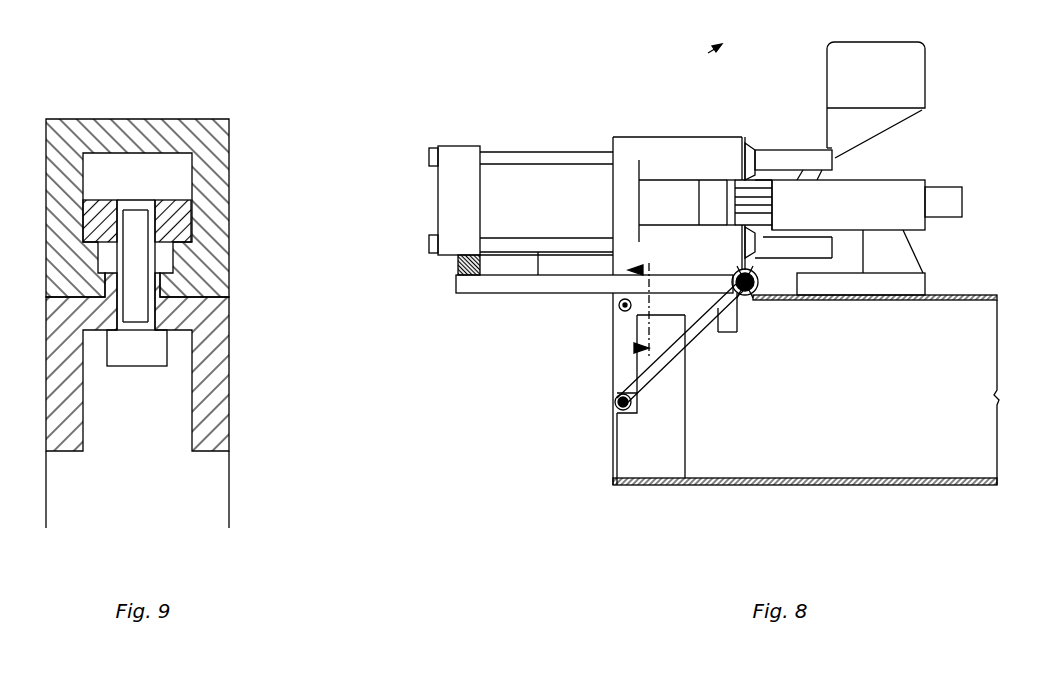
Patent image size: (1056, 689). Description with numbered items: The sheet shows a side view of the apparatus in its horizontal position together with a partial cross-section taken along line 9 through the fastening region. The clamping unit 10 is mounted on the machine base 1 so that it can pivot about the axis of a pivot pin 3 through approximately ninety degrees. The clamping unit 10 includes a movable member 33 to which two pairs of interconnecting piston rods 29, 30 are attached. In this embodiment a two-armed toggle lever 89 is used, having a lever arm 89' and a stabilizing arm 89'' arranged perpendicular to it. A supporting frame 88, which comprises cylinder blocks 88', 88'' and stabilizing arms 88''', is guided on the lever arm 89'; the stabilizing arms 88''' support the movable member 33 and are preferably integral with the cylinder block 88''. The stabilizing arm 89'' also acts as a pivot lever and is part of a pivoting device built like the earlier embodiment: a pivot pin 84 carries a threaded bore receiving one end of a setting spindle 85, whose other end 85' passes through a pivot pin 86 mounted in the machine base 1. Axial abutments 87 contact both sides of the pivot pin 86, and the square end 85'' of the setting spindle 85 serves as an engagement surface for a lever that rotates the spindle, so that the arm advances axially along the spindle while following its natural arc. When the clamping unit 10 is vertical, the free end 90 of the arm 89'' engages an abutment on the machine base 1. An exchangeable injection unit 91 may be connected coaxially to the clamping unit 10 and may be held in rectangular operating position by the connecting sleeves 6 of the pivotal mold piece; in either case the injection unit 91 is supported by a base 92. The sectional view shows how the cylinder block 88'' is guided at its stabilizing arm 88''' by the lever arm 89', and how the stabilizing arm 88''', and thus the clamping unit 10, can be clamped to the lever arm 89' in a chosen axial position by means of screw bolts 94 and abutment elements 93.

In FIG. 8, the machine base 1 is at (759, 485).
In FIG. 8, the pivot pin 3 is at (618, 312).
In FIG. 8, the connecting sleeves 6 is at (723, 332).
In FIG. 8, the section line 9— 9 is at (645, 309).
In FIG. 8, the clamping unit 10 is at (744, 28).
In FIG. 8, the piston rods 29 is at (506, 152).
In FIG. 8, the piston rods 30 is at (538, 275).
In FIG. 8, the movable member 33 is at (462, 178).
In FIG. 8, the pivot pin 84 is at (617, 413).
In FIG. 8, the setting spindle 85 is at (666, 428).
In FIG. 8, the other end of setting spindle 85' is at (791, 404).
In FIG. 8, the square end of setting spindle 85'' is at (792, 164).
In FIG. 8, the pivot pin 86 is at (740, 268).
In FIG. 8, the axial abutments 87 is at (743, 266).
In FIG. 8, the supporting frame 88 is at (684, 168).
In FIG. 8, the cylinder block 88' is at (622, 151).
In FIG. 9, the cylinder block 88'' is at (195, 208).
In FIG. 8, the cylinder block 88'' is at (647, 202).
In FIG. 8, the stabilizing arms 88''' is at (594, 304).
In FIG. 8, the two-armed toggle lever 89 is at (680, 358).
In FIG. 9, the lever arm 89' is at (191, 362).
In FIG. 8, the lever arm 89' is at (619, 351).
In FIG. 8, the stabilizing arm 89'' is at (596, 405).
In FIG. 9, the free end of arm 90 is at (163, 415).
In FIG. 8, the free end of arm 90 is at (640, 410).
In FIG. 8, the injection unit 91 is at (890, 187).
In FIG. 8, the base 92 is at (905, 255).
In FIG. 9, the abutment elements 93 is at (178, 214).
In FIG. 9, the screw bolts 94 is at (153, 342).